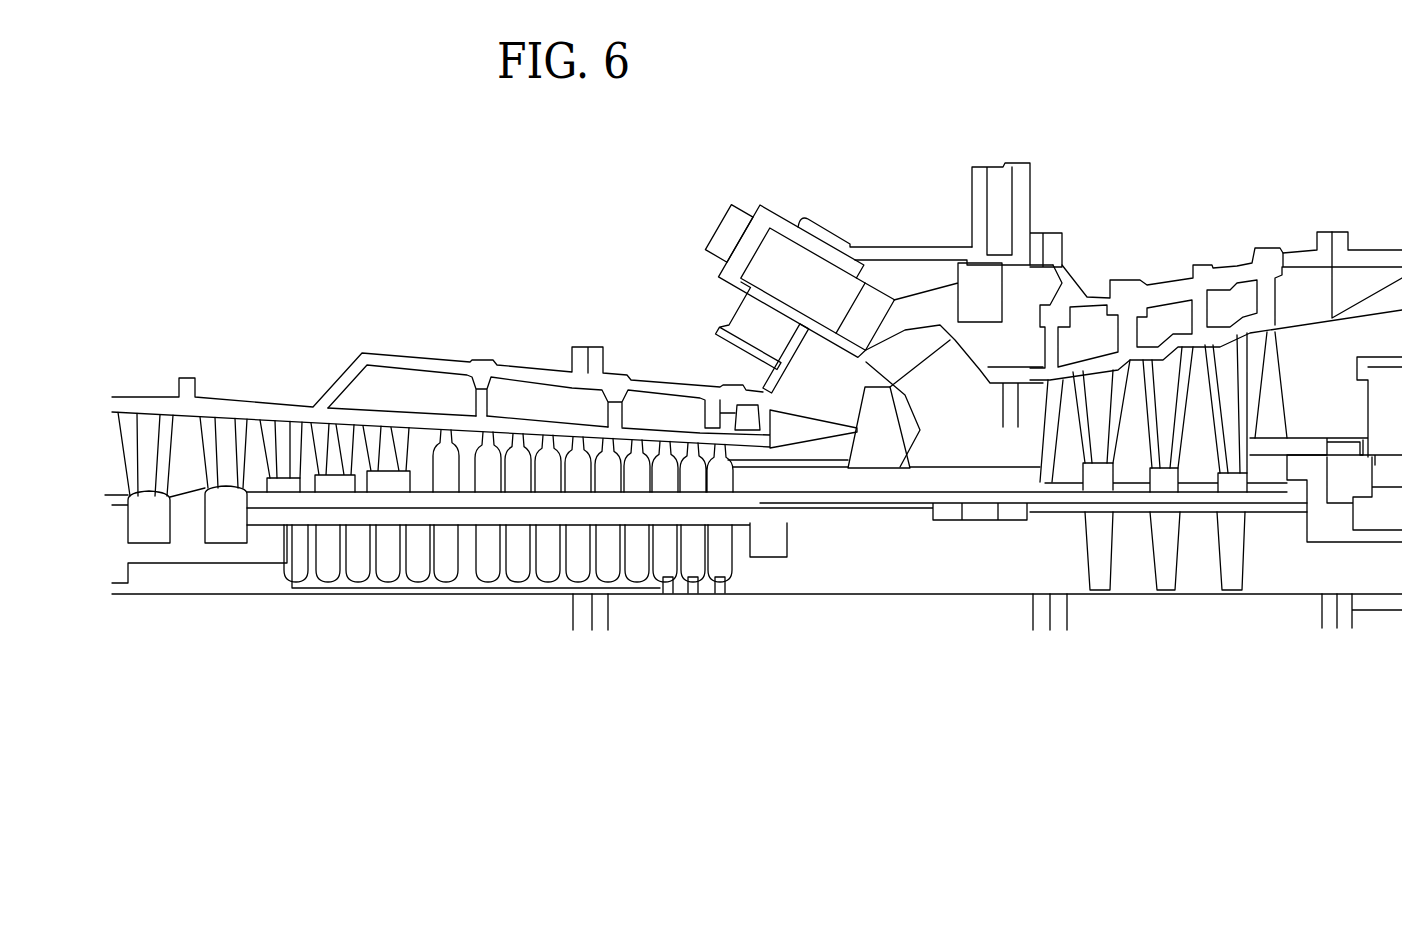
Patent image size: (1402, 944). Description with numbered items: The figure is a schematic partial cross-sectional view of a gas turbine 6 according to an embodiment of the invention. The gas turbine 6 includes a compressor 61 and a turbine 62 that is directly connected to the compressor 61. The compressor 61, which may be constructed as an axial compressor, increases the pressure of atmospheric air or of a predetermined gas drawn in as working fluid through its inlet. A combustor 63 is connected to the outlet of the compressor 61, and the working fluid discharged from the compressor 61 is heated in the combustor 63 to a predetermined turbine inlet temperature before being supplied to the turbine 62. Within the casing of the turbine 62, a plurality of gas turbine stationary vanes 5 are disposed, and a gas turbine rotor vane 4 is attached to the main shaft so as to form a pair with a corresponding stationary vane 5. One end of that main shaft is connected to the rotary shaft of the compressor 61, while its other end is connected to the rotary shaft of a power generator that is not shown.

The gas turbine 6 is at (967, 142).
The compressor 61 is at (287, 413).
The combustor 63 is at (850, 247).
The turbine 62 is at (1237, 263).
The gas turbine rotor vane 4 is at (1128, 420).
The gas turbine stationary vane 5 is at (1243, 385).